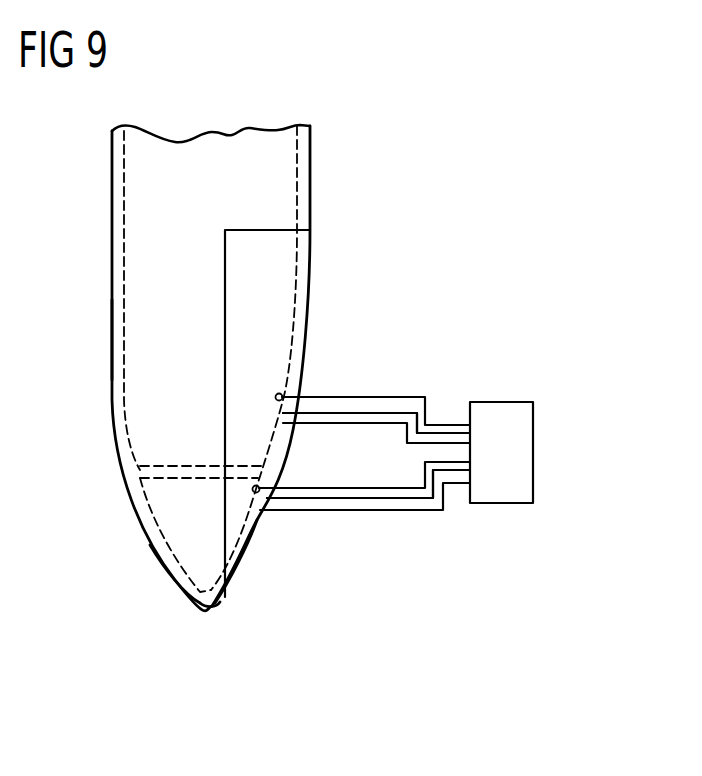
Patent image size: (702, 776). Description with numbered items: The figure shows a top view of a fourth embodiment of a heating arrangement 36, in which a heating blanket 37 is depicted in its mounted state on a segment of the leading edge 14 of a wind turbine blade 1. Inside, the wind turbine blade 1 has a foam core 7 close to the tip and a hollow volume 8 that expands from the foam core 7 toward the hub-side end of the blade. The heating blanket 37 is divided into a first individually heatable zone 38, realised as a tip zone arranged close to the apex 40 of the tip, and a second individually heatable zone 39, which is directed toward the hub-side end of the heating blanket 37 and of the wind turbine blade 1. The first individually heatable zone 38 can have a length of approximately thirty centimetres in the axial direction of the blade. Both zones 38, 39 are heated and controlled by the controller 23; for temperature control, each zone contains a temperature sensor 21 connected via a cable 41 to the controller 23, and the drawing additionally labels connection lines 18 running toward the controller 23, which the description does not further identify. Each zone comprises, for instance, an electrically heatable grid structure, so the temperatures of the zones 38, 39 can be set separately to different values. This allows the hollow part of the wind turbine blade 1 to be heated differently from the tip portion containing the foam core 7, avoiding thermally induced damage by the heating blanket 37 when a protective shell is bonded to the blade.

The wind turbine blade 1 is at (213, 152).
The heating arrangement 36 is at (390, 120).
The leading edge 14 is at (310, 165).
The second individually heatable zone 39 is at (303, 245).
The heating blanket 37 is at (275, 281).
The hollow volume 8 is at (148, 330).
The temperature sensor 21 is at (282, 394).
The cable 41 is at (390, 397).
The connecting lines 18 is at (443, 437).
The controller 23 is at (533, 450).
The foam core 7 is at (172, 512).
The first individually heatable zone 38 is at (235, 521).
The apex 40 is at (212, 607).